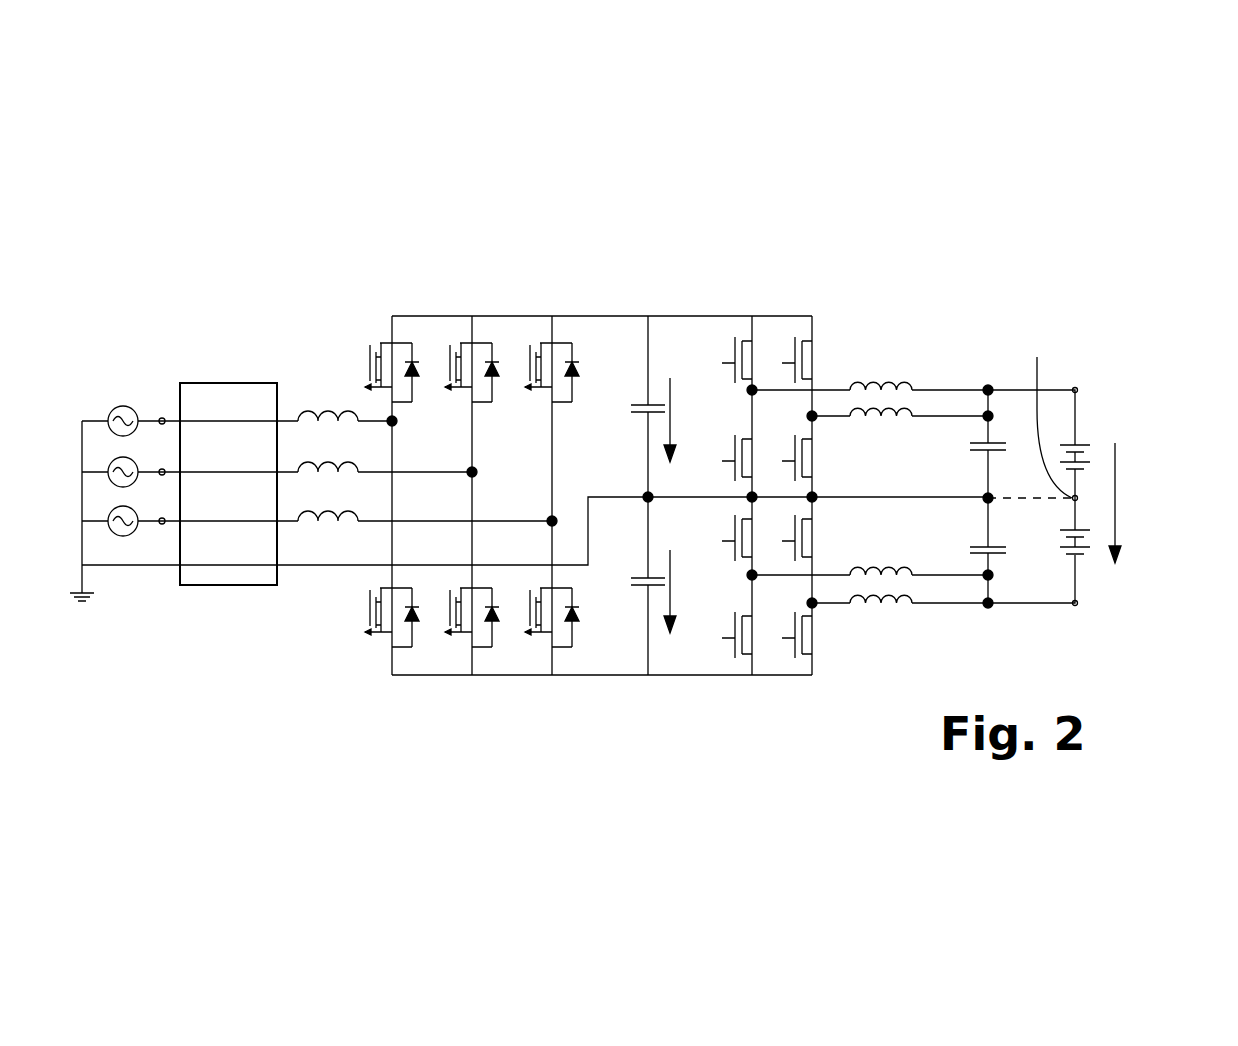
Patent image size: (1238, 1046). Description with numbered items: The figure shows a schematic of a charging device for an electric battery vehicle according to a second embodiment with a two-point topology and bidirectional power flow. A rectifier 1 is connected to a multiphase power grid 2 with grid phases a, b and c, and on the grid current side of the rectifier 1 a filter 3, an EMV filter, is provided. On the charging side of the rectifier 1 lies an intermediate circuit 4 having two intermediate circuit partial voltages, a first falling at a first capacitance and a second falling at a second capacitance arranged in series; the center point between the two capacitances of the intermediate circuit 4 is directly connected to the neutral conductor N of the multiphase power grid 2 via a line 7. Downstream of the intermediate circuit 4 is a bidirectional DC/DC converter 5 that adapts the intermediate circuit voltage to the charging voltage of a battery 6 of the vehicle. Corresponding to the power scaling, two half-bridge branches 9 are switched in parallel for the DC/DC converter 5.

The rectifier 1 is at (478, 260).
The multiphase power grid 2 is at (137, 288).
The filter 3 is at (227, 335).
The intermediate circuit 4 is at (633, 255).
The DC/DC converter 5 is at (868, 272).
The battery 6 is at (1098, 308).
The line 7 is at (332, 567).
The half-bridge branch 9 is at (747, 282).